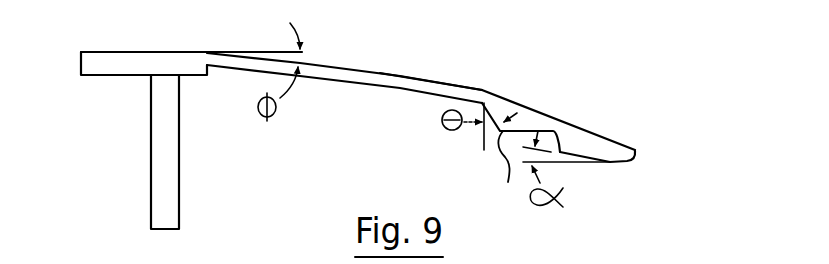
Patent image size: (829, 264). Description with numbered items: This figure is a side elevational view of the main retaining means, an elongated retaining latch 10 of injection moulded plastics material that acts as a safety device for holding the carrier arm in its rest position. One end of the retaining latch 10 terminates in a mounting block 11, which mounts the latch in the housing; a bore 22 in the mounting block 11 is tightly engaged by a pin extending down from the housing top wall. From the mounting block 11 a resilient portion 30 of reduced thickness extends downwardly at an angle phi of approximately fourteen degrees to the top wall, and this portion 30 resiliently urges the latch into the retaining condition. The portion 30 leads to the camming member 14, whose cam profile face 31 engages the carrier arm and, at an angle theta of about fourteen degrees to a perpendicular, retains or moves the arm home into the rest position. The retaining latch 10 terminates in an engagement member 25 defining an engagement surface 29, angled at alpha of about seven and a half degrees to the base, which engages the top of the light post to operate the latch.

The retaining latch 10 is at (323, 65).
The mounting block 11 is at (102, 52).
The camming member 14 is at (516, 110).
The bore 22 is at (151, 159).
The engagement member 25 is at (612, 148).
The engagement surface 29 is at (608, 165).
The portion 30 is at (420, 78).
The cam profile face 31 is at (503, 172).